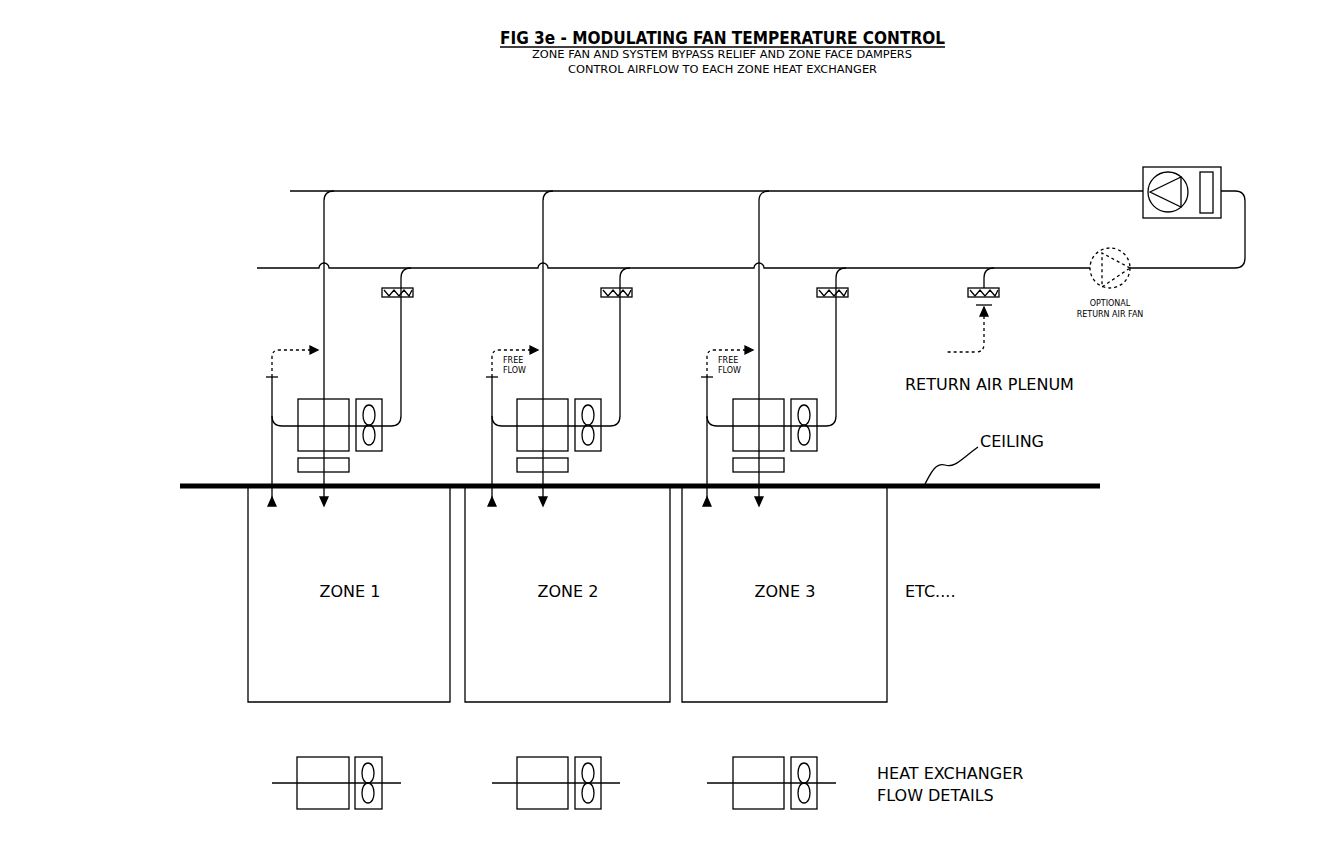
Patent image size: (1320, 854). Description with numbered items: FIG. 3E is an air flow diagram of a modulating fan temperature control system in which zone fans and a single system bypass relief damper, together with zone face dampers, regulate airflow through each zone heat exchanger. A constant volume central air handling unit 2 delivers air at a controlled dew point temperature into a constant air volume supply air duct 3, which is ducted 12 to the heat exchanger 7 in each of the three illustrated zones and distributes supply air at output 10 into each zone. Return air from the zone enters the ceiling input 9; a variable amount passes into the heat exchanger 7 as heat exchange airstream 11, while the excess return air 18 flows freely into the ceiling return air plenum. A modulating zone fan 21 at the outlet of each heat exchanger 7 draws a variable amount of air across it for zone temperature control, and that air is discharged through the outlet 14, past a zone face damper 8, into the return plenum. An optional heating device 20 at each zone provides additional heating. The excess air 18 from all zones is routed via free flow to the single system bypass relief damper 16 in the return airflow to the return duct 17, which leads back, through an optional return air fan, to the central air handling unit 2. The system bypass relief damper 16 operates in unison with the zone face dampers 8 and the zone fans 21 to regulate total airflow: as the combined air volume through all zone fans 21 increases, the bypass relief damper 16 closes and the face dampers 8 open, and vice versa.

The central air handling unit 2 is at (1207, 218).
The constant air volume supply air duct 3 is at (800, 190).
The heat exchanger 7 is at (349, 398).
The zone face damper 8 is at (393, 298).
The ceiling input 9 is at (273, 506).
The output 10 is at (327, 506).
The heat exchange airstream 11 is at (278, 426).
The ducting 12 is at (324, 250).
The outlet 14 is at (401, 333).
The system bypass relief damper 16 is at (972, 300).
The return duct 17 is at (903, 268).
The excess return air 18 is at (272, 364).
The optional heating device 20 is at (349, 465).
The modulating zone fan 21 is at (372, 398).